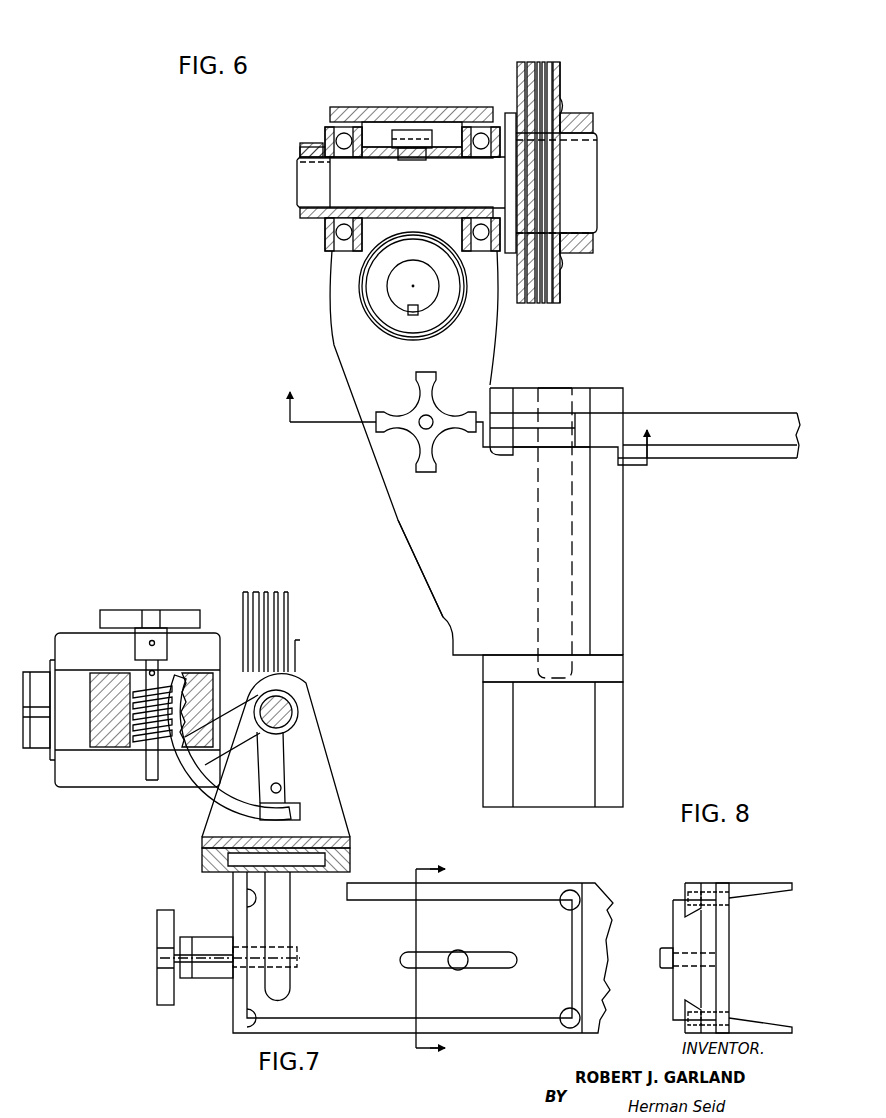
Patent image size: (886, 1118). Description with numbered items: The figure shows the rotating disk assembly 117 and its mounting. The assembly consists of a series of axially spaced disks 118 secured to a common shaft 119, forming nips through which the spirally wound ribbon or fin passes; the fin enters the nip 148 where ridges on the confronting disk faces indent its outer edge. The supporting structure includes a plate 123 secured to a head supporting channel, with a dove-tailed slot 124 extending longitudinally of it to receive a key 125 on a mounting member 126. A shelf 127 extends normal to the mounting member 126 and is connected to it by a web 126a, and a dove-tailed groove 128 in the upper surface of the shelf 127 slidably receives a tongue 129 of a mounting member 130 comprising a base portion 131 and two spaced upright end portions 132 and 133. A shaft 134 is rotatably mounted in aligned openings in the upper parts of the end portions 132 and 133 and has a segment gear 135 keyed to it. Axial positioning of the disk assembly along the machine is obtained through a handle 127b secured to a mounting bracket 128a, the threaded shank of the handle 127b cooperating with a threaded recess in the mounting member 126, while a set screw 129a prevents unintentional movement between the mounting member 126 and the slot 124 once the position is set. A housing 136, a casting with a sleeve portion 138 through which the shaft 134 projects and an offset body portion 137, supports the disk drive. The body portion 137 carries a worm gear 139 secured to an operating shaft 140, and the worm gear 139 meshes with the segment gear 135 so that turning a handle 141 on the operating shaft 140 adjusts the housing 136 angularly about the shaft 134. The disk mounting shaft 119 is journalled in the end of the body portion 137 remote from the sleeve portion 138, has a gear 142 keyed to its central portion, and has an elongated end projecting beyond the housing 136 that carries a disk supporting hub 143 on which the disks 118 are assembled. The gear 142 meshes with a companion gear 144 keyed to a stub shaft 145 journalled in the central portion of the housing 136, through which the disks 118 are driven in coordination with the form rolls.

In FIG. 6, the rotating disk assembly 117 is at (558, 92).
In FIG. 6, the disks 118 is at (528, 62).
In FIG. 6, the shaft 119 is at (597, 158).
In FIG. 6, the plate 123 is at (633, 421).
In FIG. 8, the plate 123 is at (690, 884).
In FIG. 8, the dove-tailed slot 124 is at (703, 935).
In FIG. 8, the key 125 is at (690, 948).
In FIG. 6, the mounting member 126 is at (725, 458).
In FIG. 8, the mounting member 126 is at (673, 1008).
In FIG. 7, the web 126a is at (280, 930).
In FIG. 6, the shelf 127 is at (626, 742).
In FIG. 7, the shelf 127 is at (350, 860).
In FIG. 7, the handle 127b is at (166, 1000).
In FIG. 7, the dove-tailed groove 128 is at (290, 874).
In FIG. 7, the mounting bracket 128a is at (300, 964).
In FIG. 7, the tongue 129 is at (236, 873).
In FIG. 7, the set screw 129a is at (462, 955).
In FIG. 7, the mounting member 130 is at (333, 772).
In FIG. 7, the base portion 131 is at (312, 840).
In FIG. 6, the upright end portion 132 is at (595, 680).
In FIG. 6, the upright end portion 133 is at (583, 397).
In FIG. 7, the shaft 134 is at (283, 705).
In FIG. 6, the segment gear 135 is at (502, 422).
In FIG. 7, the segment gear 135 is at (210, 805).
In FIG. 6, the housing 136 is at (412, 562).
In FIG. 6, the body portion 137 is at (345, 333).
In FIG. 6, the sleeve portion 138 is at (562, 538).
In FIG. 7, the worm gear 139 is at (165, 680).
In FIG. 7, the operating shaft 140 is at (153, 610).
In FIG. 6, the handle 141 is at (403, 427).
In FIG. 7, the handle 141 is at (112, 618).
In FIG. 6, the gear 142 is at (410, 133).
In FIG. 6, the disk supporting hub 143 is at (510, 113).
In FIG. 6, the companion gear 144 is at (380, 295).
In FIG. 6, the stub shaft 145 is at (398, 273).
In FIG. 6, the nip 148 is at (569, 160).